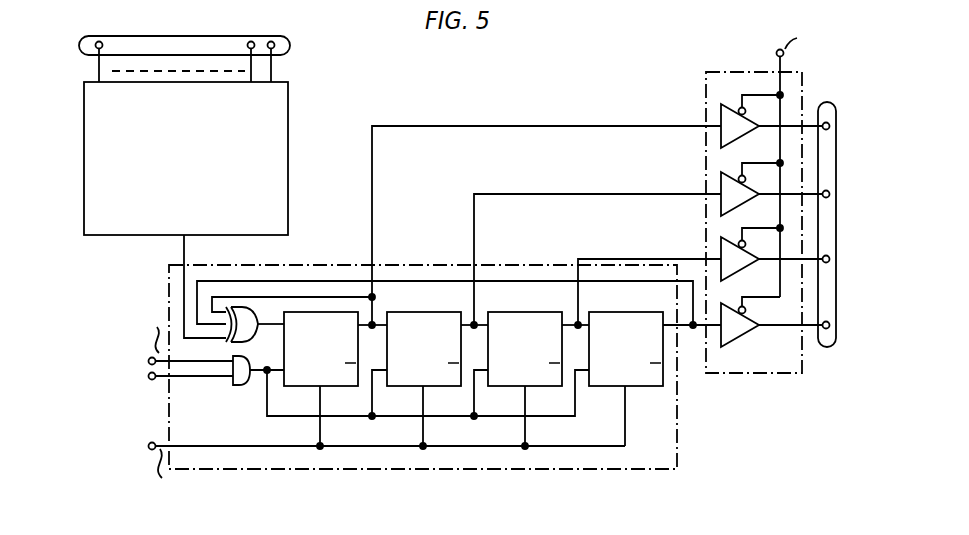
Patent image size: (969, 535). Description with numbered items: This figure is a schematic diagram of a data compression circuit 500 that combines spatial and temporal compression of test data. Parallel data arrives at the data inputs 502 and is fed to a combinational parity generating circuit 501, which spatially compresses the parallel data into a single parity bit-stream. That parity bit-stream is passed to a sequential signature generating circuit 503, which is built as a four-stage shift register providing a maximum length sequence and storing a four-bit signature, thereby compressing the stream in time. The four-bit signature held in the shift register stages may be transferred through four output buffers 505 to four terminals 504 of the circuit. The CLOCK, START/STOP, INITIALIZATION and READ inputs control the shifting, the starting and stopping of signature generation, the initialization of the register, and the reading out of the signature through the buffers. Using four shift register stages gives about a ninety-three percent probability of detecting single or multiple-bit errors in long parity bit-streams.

The data compression circuit 500 is at (341, 201).
The combinational parity generating circuit 501 is at (287, 131).
The data inputs 502 is at (290, 45).
The sequential signature generating circuit 503 is at (318, 264).
The terminals 504 is at (826, 348).
The output buffers 505 is at (723, 72).